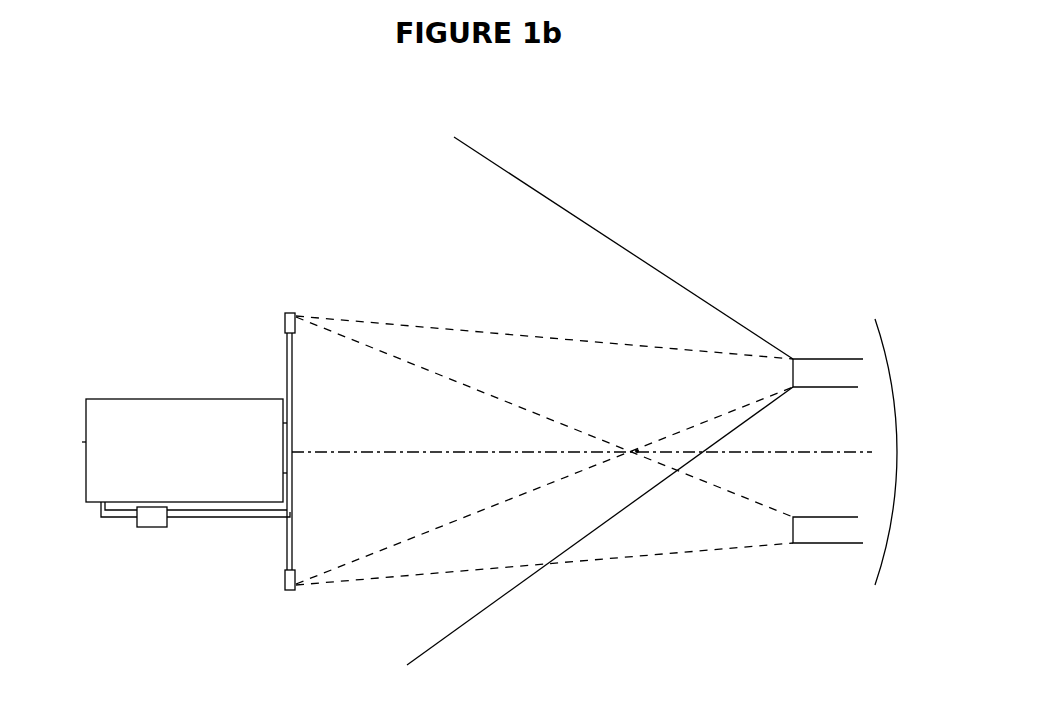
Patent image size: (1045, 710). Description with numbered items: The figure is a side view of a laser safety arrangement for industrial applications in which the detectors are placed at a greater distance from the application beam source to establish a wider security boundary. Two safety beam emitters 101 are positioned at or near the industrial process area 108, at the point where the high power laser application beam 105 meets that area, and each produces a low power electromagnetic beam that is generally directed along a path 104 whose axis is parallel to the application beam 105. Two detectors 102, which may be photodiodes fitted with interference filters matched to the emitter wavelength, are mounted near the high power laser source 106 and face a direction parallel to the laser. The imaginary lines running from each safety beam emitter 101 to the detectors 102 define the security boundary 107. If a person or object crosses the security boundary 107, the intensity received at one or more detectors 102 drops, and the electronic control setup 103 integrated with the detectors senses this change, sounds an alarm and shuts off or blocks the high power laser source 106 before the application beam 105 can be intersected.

The safety beam emitter 101 is at (828, 347).
The detector 102 is at (263, 451).
The electronic control setup 103 is at (195, 533).
The path 104 is at (600, 401).
The high power laser application beam 105 is at (397, 455).
The high power laser source 106 is at (187, 451).
The security boundary 107 is at (544, 445).
The industrial process area 108 is at (903, 452).